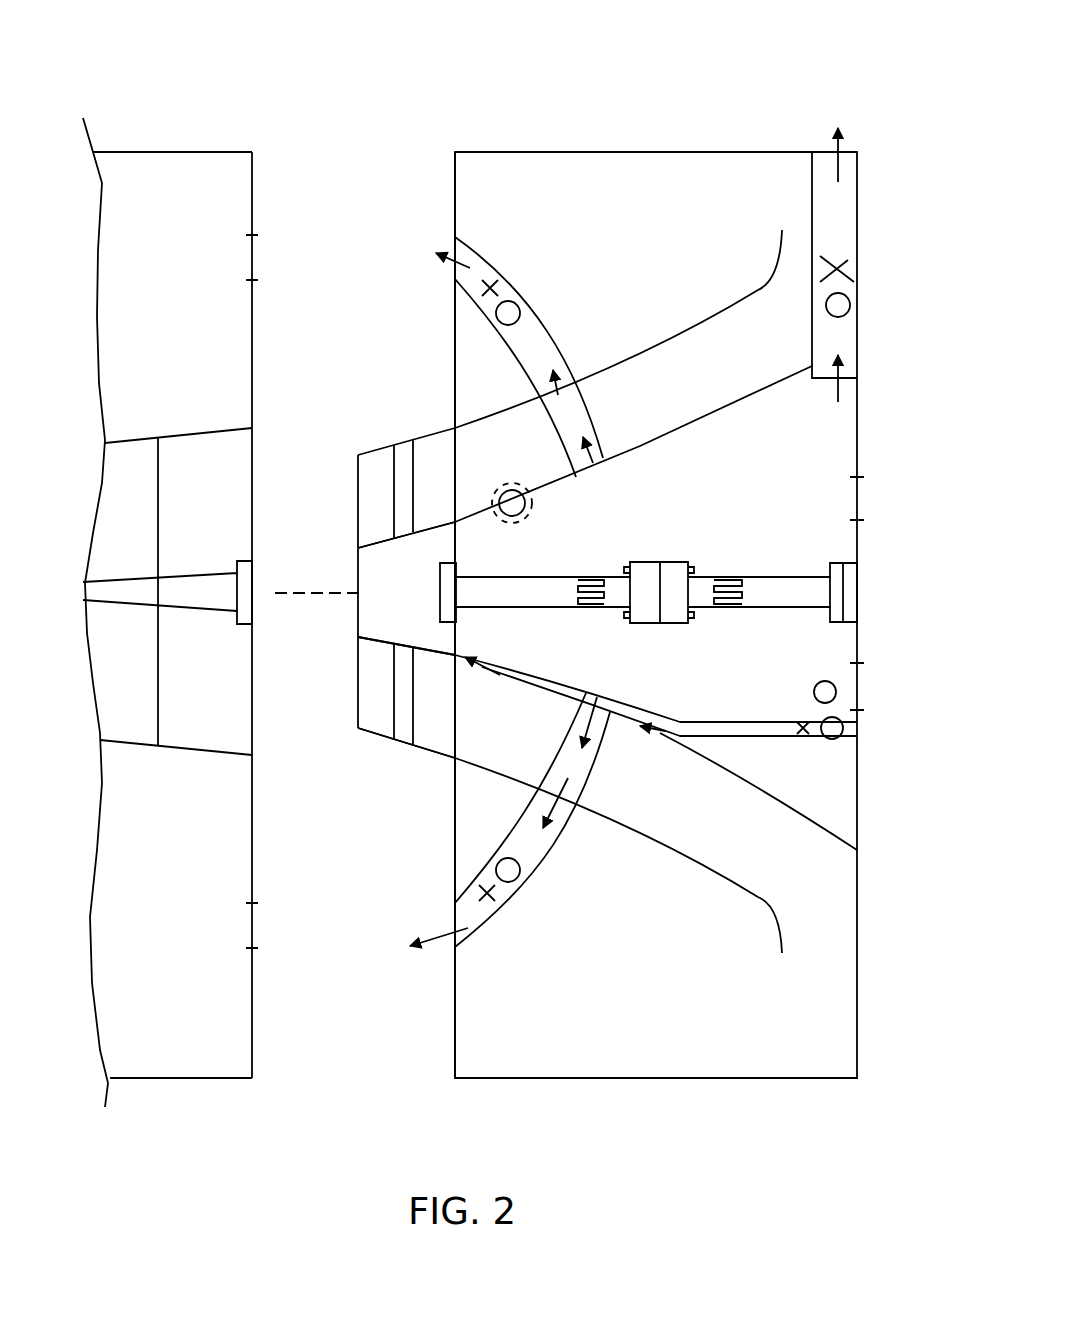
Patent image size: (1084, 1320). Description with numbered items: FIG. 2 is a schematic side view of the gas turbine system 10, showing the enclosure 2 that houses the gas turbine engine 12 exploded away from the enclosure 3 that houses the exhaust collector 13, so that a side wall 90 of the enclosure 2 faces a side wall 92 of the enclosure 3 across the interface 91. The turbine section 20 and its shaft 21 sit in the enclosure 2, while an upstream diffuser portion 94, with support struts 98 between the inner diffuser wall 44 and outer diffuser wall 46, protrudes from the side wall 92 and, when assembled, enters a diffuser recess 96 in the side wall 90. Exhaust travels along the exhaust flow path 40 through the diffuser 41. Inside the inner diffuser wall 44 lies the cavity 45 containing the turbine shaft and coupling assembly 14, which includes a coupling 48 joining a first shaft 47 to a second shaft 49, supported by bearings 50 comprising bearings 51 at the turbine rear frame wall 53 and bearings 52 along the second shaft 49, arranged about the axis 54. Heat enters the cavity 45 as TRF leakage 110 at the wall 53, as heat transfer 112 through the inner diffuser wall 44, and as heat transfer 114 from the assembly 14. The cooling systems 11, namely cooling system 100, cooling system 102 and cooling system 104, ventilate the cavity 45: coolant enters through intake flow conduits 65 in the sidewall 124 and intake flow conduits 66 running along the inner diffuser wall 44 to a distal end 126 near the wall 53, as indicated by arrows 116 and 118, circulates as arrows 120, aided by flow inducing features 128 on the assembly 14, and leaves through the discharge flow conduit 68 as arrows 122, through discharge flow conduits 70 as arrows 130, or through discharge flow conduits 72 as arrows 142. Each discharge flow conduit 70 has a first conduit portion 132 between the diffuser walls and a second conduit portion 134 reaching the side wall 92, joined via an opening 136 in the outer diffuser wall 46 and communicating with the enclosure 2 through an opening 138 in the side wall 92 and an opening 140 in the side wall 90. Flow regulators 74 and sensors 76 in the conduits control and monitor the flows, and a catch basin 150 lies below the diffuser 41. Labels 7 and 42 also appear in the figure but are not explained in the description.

The enclosure 2 is at (150, 1080).
The enclosure 3 is at (530, 1080).
The cooling air flow 7 is at (862, 498).
The gas turbine system 10 is at (302, 90).
The cooling systems 11 is at (655, 140).
The gas turbine engine 12 is at (168, 175).
The exhaust collector 13 is at (567, 170).
The turbine shaft and coupling assembly 14 is at (784, 490).
The turbine section 20 is at (120, 438).
The shaft 21 is at (210, 570).
The exhaust flow path 40 is at (805, 245).
The diffuser 41 is at (652, 346).
The lower outer wall 42 is at (455, 742).
The inner diffuser wall 44 is at (758, 392).
The cavity 45 is at (752, 679).
The outer diffuser wall 46 is at (707, 320).
The first shaft 47 is at (540, 607).
The coupling 48 is at (672, 562).
The second shaft 49 is at (772, 580).
The bearings 50 is at (866, 600).
The bearings 51 is at (440, 580).
The bearings 52 is at (840, 560).
The turbine rear frame wall 53 is at (452, 636).
The axis 54 is at (303, 592).
The intake flow conduits 65 is at (858, 478).
The intake flow conduits 66 is at (662, 718).
The discharge flow conduit 68 is at (833, 227).
The discharge flow conduits 70 is at (524, 358).
The discharge flow conduits 72 is at (487, 507).
The flow regulator 74 is at (497, 292).
The sensors 76 is at (520, 318).
The side wall 90 is at (255, 170).
The interface 91 is at (257, 1022).
The side wall 92 is at (455, 190).
The upstream diffuser portion 94 is at (362, 450).
The diffuser recess 96 is at (185, 433).
The support struts 98 is at (412, 460).
The cooling system 100 is at (850, 112).
The cooling system 102 is at (568, 220).
The cooling system 104 is at (463, 420).
The TRF leakage 110 is at (462, 575).
The arrows 112 is at (648, 473).
The arrows 114 is at (662, 495).
The arrows 116 is at (873, 593).
The arrows 118 is at (502, 676).
The arrows 120 is at (718, 468).
The arrows 122 is at (840, 162).
The sidewall 124 is at (858, 395).
The distal end 126 is at (488, 655).
The flow inducing features 128 is at (592, 577).
The arrows 130 is at (470, 265).
The first conduit portion 132 is at (585, 408).
The second conduit portion 134 is at (550, 330).
The opening 136 is at (545, 415).
The opening 138 is at (455, 248).
The opening 140 is at (255, 262).
The arrows 142 is at (566, 464).
The catch basin 150 is at (705, 135).